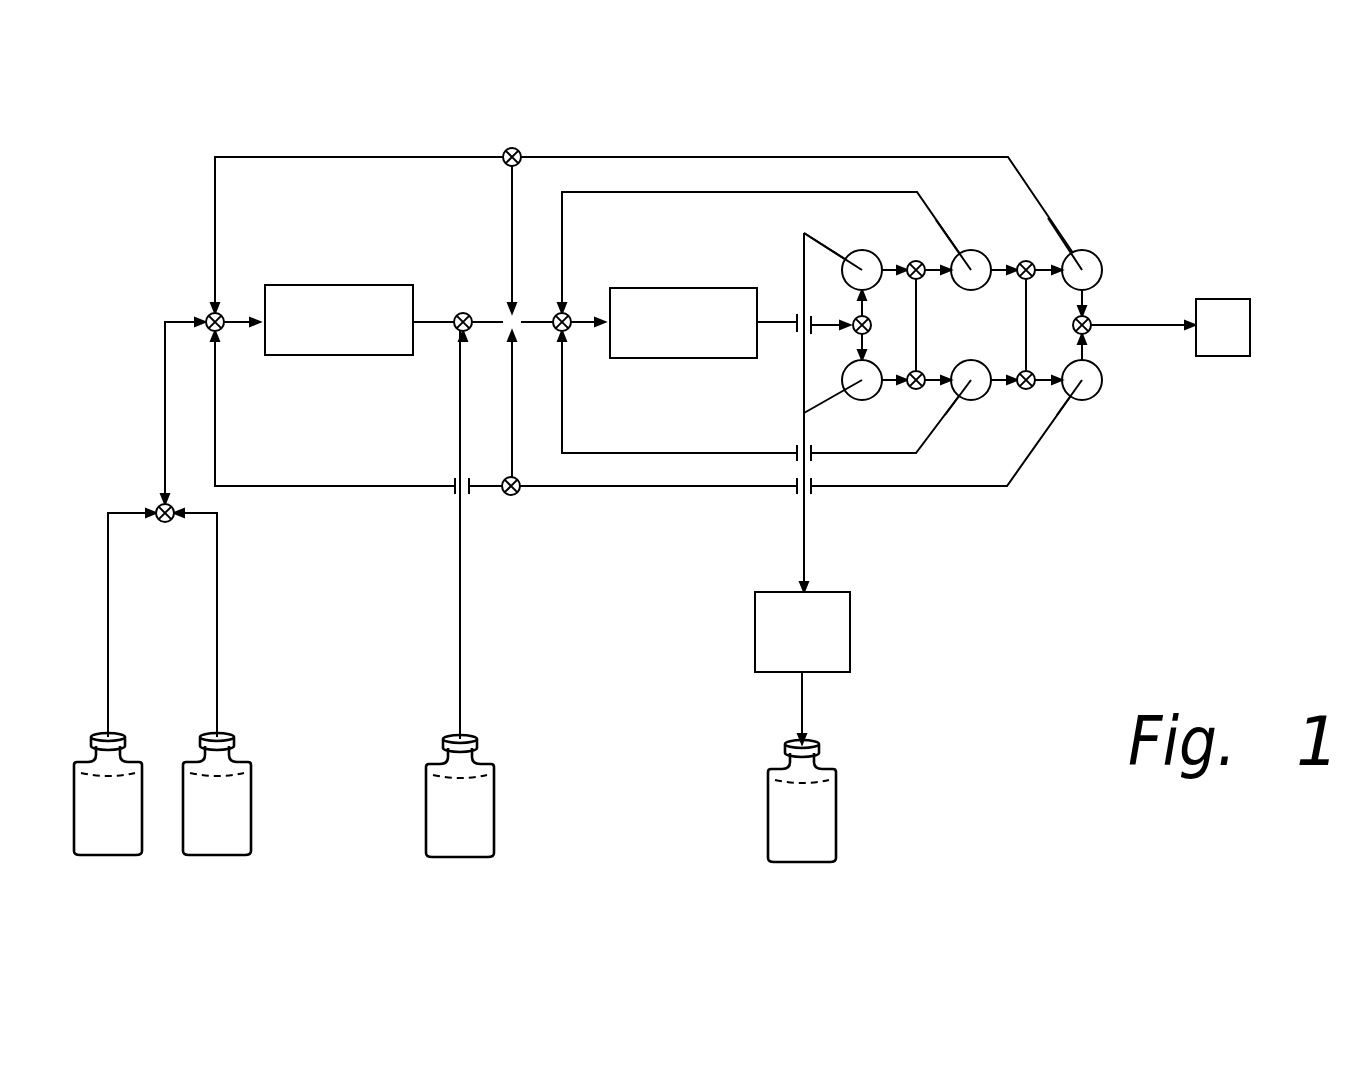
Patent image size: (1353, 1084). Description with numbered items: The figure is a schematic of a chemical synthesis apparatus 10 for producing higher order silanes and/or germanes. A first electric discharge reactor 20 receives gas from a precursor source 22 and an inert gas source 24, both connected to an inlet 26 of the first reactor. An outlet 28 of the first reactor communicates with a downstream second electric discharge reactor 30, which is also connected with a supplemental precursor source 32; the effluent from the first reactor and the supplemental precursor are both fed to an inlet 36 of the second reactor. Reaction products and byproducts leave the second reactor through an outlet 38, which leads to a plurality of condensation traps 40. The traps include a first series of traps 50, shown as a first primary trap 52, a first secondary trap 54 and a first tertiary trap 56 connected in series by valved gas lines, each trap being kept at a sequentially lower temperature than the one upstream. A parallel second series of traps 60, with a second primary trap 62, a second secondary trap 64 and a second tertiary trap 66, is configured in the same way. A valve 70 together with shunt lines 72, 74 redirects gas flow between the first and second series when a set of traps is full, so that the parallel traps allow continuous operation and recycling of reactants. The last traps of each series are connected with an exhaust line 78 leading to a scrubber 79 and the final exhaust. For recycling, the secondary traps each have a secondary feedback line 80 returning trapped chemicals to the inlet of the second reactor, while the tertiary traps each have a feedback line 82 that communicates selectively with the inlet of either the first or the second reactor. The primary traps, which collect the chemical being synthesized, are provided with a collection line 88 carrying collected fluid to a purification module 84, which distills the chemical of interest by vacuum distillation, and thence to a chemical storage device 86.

The chemical synthesis apparatus 10 is at (1205, 186).
The first electric discharge reactor 20 is at (340, 285).
The precursor source 22 is at (108, 857).
The inert gas source 24 is at (217, 857).
The inlet 26 is at (237, 315).
The outlet 28 is at (437, 315).
The second electric discharge reactor 30 is at (685, 288).
The supplemental precursor source 32 is at (460, 859).
The inlet 36 is at (580, 315).
The outlet 38 is at (777, 315).
The plurality of condensation traps 40 is at (1110, 143).
The first series of traps 50 is at (1011, 263).
The first primary trap 52 is at (863, 248).
The first secondary trap 54 is at (971, 248).
The first tertiary trap 56 is at (1082, 248).
The second series of traps 60 is at (1008, 389).
The second primary trap 62 is at (862, 402).
The second secondary trap 64 is at (971, 402).
The second tertiary trap 66 is at (1082, 402).
The valve 70 is at (855, 315).
The shunt line 72 is at (918, 303).
The shunt line 74 is at (1022, 327).
The exhaust line 78 is at (1140, 325).
The scrubber 79 is at (1225, 299).
The secondary feedback line 80 is at (703, 192).
The feedback line 82 is at (595, 157).
The purification module 84 is at (850, 633).
The chemical storage device 86 is at (802, 864).
The collection line 88 is at (804, 538).